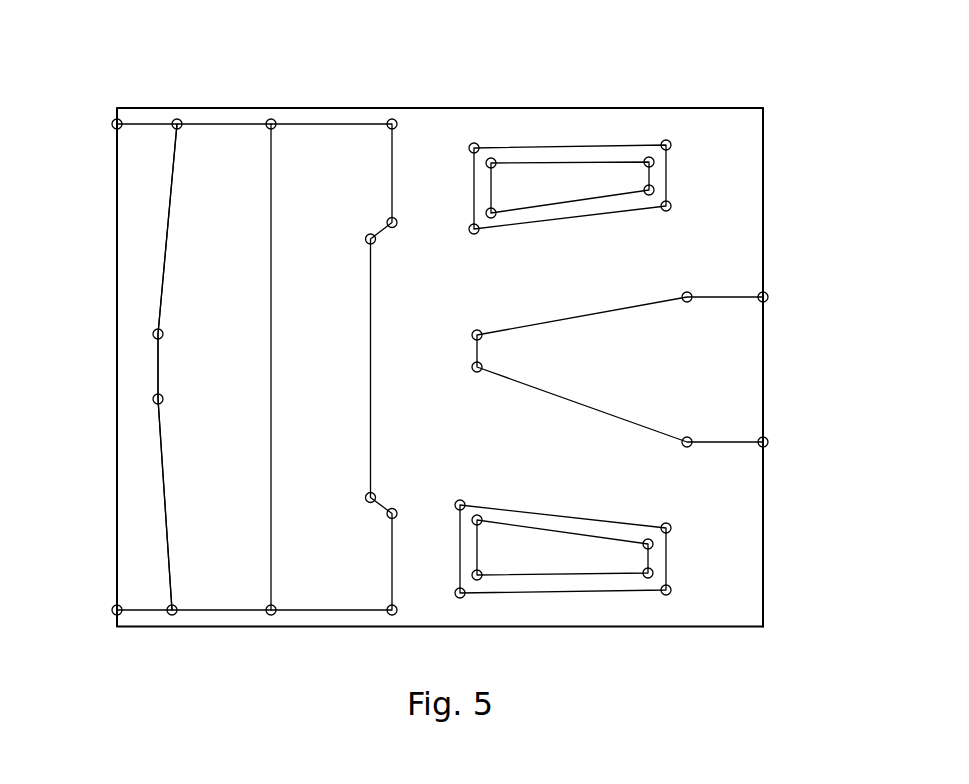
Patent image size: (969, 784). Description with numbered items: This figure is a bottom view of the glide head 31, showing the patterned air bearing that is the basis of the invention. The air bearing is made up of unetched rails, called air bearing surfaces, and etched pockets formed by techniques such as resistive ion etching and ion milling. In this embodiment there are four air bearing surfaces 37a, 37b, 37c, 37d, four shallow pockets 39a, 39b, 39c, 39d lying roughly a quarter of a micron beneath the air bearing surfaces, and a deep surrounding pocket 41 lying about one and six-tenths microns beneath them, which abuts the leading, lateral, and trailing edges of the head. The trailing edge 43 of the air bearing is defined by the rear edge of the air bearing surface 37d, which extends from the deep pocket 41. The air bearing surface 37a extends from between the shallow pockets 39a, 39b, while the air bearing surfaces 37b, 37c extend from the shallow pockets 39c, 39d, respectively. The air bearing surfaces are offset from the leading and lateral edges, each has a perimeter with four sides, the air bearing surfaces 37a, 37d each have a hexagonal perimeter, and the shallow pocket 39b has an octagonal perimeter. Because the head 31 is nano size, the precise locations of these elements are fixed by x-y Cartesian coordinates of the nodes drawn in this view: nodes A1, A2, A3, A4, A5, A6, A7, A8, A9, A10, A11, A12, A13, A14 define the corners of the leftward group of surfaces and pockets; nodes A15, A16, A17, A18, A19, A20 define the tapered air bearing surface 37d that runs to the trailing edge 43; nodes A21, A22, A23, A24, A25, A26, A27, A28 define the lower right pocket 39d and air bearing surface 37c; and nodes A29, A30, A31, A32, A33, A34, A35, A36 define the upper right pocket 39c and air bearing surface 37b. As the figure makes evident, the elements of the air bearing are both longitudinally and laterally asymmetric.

The glide head 31 is at (160, 68).
The air bearing surface 37a is at (240, 168).
The air bearing surface 37b is at (662, 173).
The air bearing surface 37c is at (625, 558).
The air bearing surface 37d is at (757, 327).
The shallow pocket 39a is at (132, 244).
The shallow pocket 39b is at (329, 170).
The shallow pocket 39c is at (662, 158).
The shallow pocket 39d is at (660, 542).
The deep surrounding pocket 41 is at (750, 492).
The trailing edge 43 is at (763, 378).
The node A1 is at (129, 600).
The node A2 is at (406, 600).
The node A3 is at (407, 507).
The node A4 is at (383, 488).
The node A5 is at (385, 248).
The node A6 is at (408, 230).
The node A7 is at (406, 135).
The node A8 is at (129, 135).
The node A9 is at (186, 600).
The node A10 is at (289, 600).
The node A11 is at (289, 135).
The node A12 is at (195, 135).
The node A13 is at (178, 336).
The node A14 is at (178, 400).
The node A15 is at (472, 381).
The node A16 is at (687, 454).
The node A17 is at (783, 441).
The node A18 is at (783, 296).
The node A19 is at (687, 285).
The node A20 is at (475, 324).
The node A21 is at (476, 604).
The node A22 is at (685, 597).
The node A23 is at (684, 519).
The node A24 is at (473, 494).
The node A25 is at (482, 579).
The node A26 is at (647, 578).
The node A27 is at (646, 539).
The node A28 is at (482, 517).
The node A29 is at (488, 242).
The node A30 is at (685, 213).
The node A31 is at (684, 134).
The node A32 is at (489, 136).
The node A33 is at (496, 217).
The node A34 is at (649, 195).
The node A35 is at (647, 157).
The node A36 is at (496, 159).